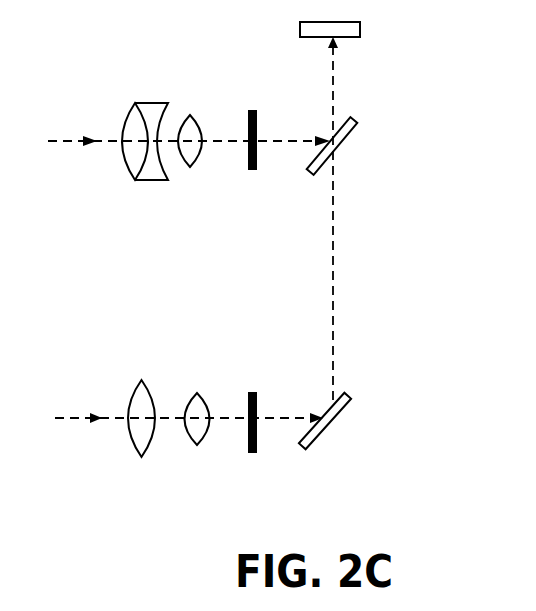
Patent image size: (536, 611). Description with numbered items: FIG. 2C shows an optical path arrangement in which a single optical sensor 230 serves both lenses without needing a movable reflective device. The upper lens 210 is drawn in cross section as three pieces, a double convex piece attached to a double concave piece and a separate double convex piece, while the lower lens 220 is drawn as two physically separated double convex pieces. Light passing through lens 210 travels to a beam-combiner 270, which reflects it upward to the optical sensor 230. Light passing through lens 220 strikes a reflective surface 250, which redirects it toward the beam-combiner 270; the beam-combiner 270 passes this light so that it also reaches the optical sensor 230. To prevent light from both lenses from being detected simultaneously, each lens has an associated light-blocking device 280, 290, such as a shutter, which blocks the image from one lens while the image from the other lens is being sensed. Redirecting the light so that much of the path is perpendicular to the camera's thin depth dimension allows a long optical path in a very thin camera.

The lens 210 is at (168, 90).
The lens 220 is at (168, 380).
The optical sensor 230 is at (361, 28).
The reflective surface 250 is at (343, 408).
The beam-combiner 270 is at (355, 127).
The light-blocking device 280 is at (253, 170).
The light-blocking device 290 is at (253, 453).